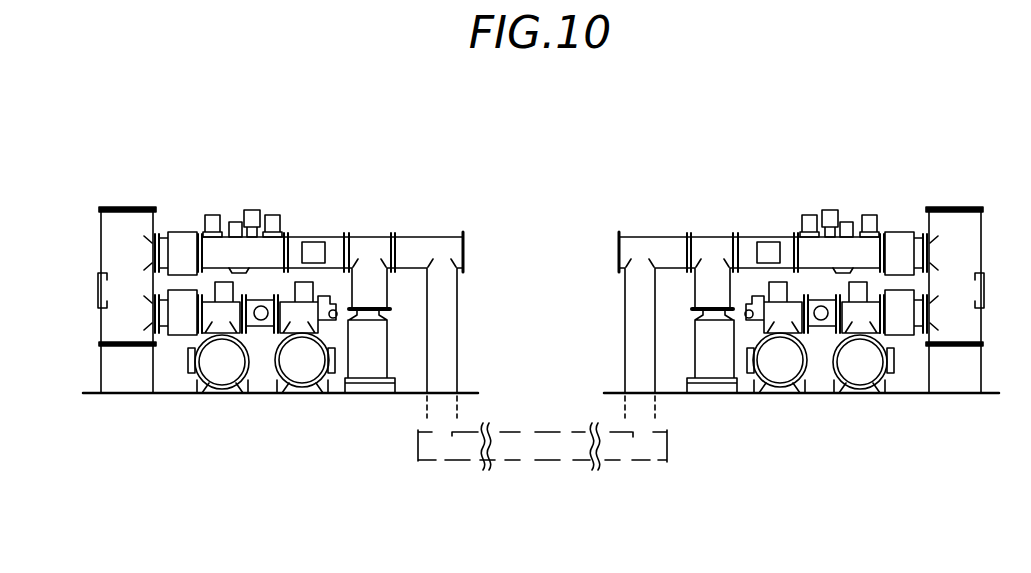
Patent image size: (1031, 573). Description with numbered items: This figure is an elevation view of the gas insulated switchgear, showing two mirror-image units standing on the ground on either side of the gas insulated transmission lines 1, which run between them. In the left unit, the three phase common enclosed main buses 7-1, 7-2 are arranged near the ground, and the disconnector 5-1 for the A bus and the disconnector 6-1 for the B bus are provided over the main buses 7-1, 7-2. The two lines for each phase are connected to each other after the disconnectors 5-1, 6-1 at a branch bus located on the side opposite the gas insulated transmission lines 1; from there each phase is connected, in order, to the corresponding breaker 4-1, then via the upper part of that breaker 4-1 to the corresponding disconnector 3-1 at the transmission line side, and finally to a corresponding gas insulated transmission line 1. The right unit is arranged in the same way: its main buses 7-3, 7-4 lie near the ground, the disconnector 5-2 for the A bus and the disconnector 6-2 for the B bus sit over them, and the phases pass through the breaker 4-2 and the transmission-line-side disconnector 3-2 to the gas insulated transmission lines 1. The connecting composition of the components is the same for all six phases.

The gas insulated transmission line 1 is at (546, 452).
The disconnector at the transmission line side 3-1 is at (233, 240).
The disconnector at the transmission line side 3-2 is at (847, 240).
The breaker 4-1 is at (126, 226).
The breaker 4-2 is at (957, 227).
The disconnector for the A bus 5-1 is at (225, 320).
The disconnector for the A bus 5-2 is at (780, 320).
The disconnector for the B bus 6-1 is at (297, 378).
The disconnector for the B bus 6-2 is at (860, 318).
The three phase common enclosed main bus 7-1 is at (228, 378).
The three phase common enclosed main bus 7-2 is at (305, 318).
The three phase common enclosed main bus 7-3 is at (800, 378).
The three phase common enclosed main bus 7-4 is at (858, 378).